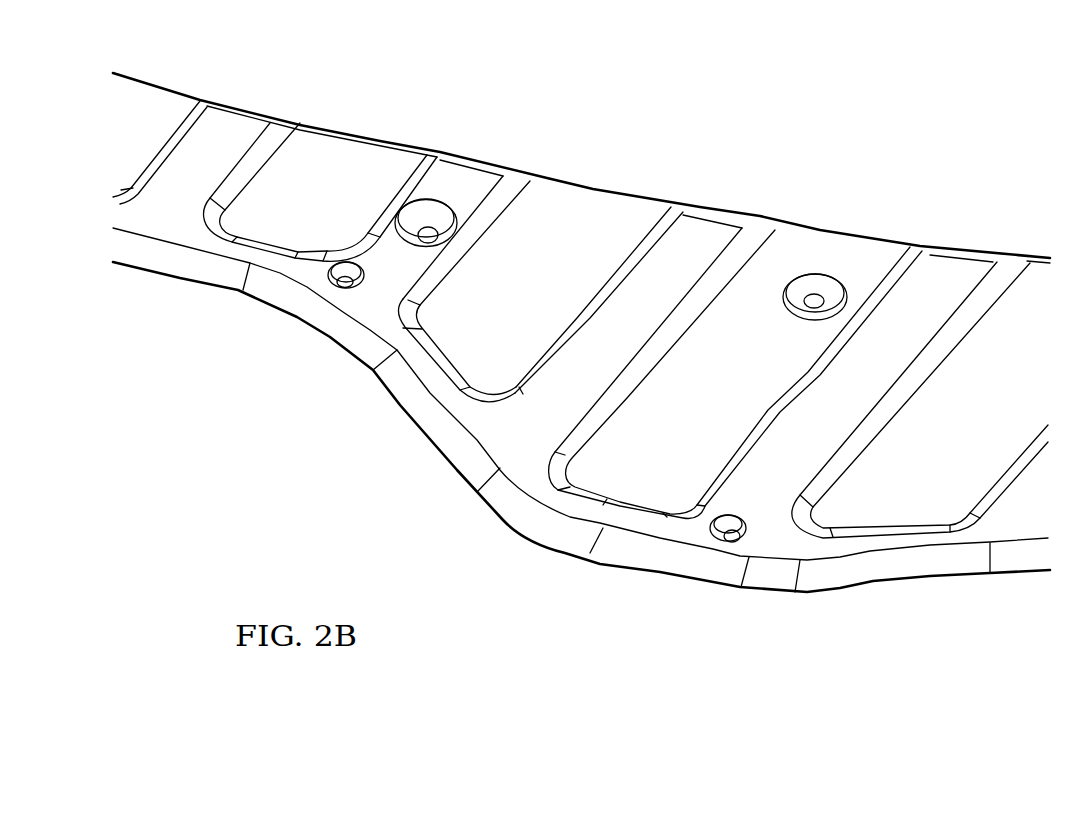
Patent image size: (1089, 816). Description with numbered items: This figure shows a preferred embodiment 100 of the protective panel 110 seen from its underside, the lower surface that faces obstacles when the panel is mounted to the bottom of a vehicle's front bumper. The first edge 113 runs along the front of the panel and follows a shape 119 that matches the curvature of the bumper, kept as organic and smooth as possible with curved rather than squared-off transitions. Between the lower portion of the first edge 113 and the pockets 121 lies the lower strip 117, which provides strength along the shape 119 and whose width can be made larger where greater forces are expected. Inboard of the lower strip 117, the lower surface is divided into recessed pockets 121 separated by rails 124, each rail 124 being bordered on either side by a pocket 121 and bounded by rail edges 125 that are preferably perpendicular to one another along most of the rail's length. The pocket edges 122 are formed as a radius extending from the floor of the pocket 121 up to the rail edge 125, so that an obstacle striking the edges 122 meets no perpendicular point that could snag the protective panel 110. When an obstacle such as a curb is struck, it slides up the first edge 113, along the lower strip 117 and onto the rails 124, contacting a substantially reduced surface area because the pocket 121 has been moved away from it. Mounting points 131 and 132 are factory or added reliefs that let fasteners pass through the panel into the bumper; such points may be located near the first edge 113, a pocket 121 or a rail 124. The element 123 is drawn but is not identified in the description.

The preferred embodiment 100 is at (916, 38).
The protective panel 110 is at (901, 189).
The first edge 113 is at (705, 560).
The lower strip 117 is at (428, 368).
The shape 119 is at (530, 537).
The pocket 121 is at (535, 302).
The pocket edge 122 is at (508, 217).
The rounded corner 123 is at (335, 243).
The rail 124 is at (598, 387).
The rail edge 125 is at (637, 258).
The mounting point 131 is at (329, 276).
The mounting point 132 is at (807, 293).